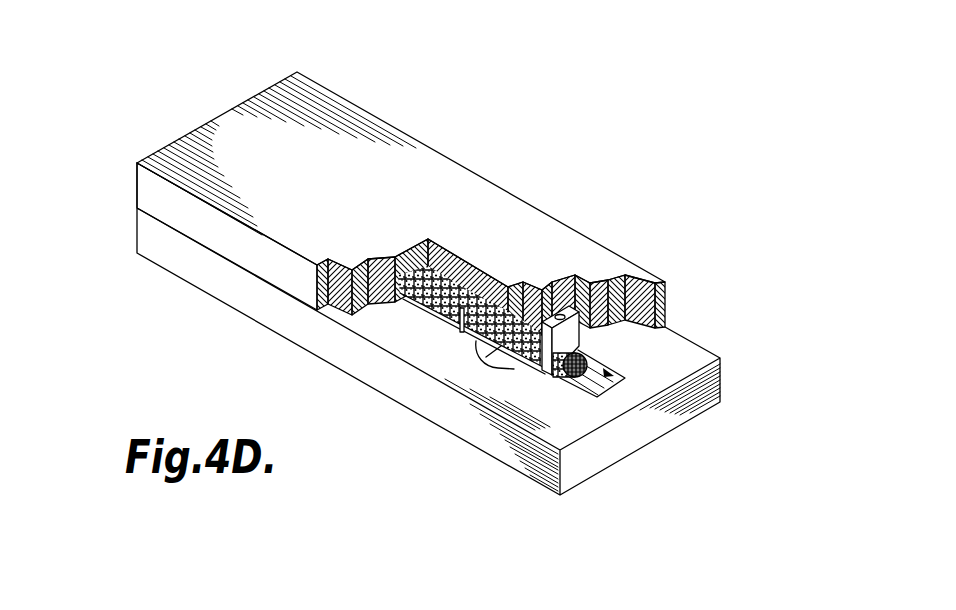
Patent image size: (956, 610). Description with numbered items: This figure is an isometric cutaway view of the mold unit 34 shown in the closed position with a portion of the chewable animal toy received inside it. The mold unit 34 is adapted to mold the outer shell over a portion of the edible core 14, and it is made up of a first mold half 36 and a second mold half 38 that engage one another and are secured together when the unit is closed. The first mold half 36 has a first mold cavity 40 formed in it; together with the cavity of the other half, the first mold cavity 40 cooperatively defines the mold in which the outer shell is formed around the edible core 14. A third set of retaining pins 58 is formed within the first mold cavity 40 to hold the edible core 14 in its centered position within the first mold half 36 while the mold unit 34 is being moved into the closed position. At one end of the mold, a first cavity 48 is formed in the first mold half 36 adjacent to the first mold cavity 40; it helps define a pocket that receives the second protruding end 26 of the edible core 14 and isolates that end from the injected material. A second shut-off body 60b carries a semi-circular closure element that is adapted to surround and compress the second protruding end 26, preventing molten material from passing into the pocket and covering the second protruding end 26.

The mold unit 34 is at (417, 260).
The second mold half 38 is at (527, 221).
The first mold half 36 is at (186, 258).
The edible core 14 is at (423, 303).
The third set of retaining pins 58 is at (453, 337).
The first mold cavity 40 is at (505, 360).
The second shut-off body 60b is at (578, 341).
The first cavity 48 is at (622, 373).
The second protruding end 26 is at (560, 372).